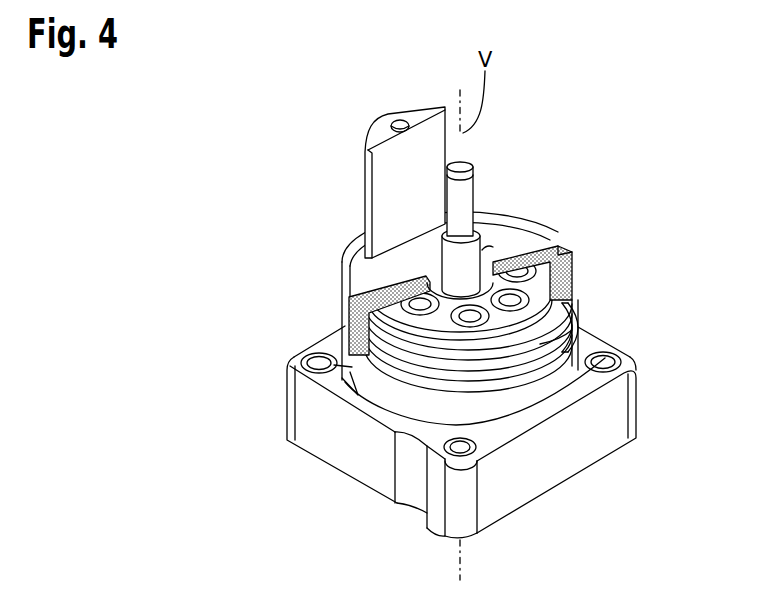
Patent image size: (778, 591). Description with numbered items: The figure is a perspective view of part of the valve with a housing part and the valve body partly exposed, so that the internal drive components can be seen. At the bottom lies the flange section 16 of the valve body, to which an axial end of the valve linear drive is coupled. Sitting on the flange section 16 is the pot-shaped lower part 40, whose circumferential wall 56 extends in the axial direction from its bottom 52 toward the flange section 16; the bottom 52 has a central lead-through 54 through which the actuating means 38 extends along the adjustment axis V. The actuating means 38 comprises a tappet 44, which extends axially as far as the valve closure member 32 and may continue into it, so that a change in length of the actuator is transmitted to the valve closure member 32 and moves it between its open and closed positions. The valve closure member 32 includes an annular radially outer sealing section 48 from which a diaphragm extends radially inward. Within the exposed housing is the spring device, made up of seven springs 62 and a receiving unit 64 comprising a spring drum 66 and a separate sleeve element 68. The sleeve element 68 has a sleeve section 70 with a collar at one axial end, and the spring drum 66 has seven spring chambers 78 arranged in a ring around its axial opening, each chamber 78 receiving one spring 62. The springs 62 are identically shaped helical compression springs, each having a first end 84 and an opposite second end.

The flange section 16 is at (318, 458).
The valve closure member 32 is at (387, 381).
The annular radially outer sealing section 48 is at (318, 377).
The actuating means 38 is at (497, 192).
The tappet 44 is at (490, 257).
The pot-shaped lower part 40 is at (343, 277).
The bottom 52 is at (385, 272).
The central lead-through 54 is at (428, 253).
The circumferential wall 56 is at (358, 327).
The springs 62 is at (606, 269).
The first end 84 is at (572, 277).
The receiving unit 64 is at (546, 347).
The spring drum 66 is at (575, 300).
The sleeve element 68 is at (558, 189).
The sleeve section 70 is at (487, 250).
The spring chambers 78 is at (540, 250).